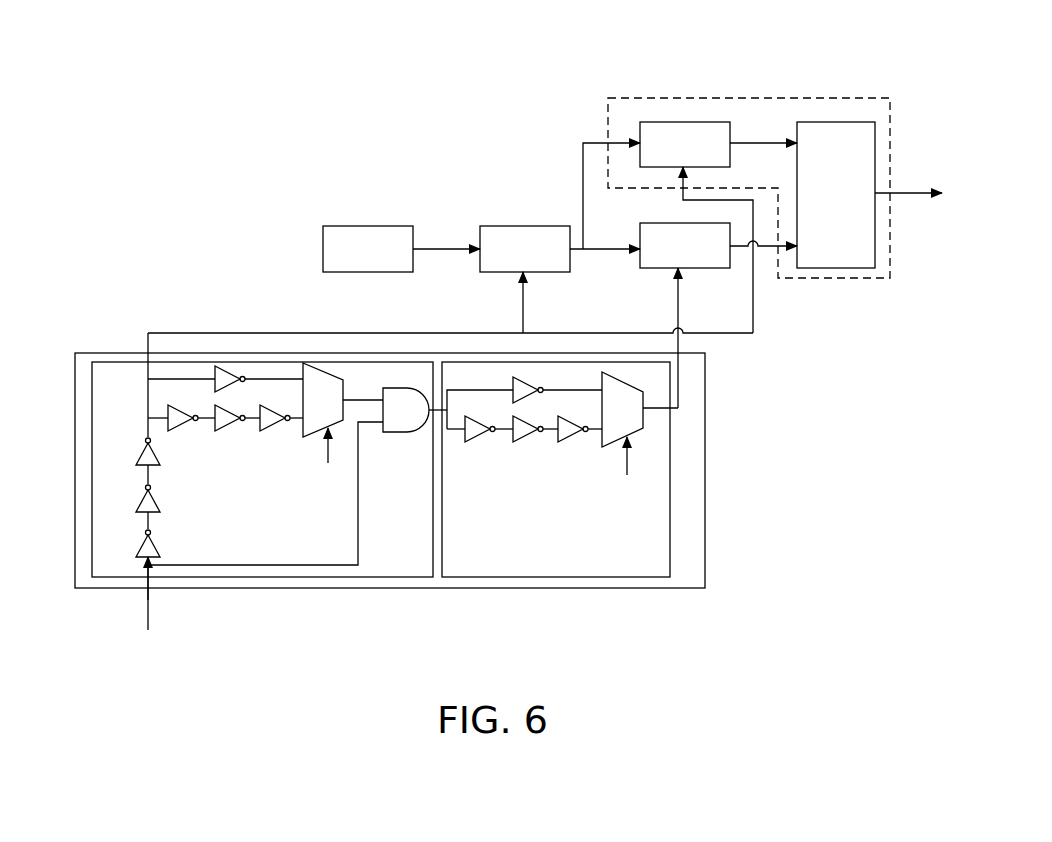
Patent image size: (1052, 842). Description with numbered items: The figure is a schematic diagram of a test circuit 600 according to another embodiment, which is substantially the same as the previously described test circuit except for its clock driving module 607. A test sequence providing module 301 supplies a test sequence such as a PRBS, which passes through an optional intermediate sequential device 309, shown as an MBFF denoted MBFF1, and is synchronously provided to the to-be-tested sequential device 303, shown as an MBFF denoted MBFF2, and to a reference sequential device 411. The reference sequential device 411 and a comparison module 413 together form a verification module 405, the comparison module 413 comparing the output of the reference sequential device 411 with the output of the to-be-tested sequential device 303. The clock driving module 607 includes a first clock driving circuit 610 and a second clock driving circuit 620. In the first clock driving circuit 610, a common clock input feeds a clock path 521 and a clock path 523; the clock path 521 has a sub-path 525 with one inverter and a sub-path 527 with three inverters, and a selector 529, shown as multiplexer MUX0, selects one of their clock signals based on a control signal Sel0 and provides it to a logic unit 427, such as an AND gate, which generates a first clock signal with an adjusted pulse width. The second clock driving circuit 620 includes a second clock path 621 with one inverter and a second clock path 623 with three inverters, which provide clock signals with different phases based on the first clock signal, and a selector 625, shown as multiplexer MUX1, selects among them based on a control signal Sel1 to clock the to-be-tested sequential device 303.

The test circuit 600 is at (399, 180).
The test sequence providing module 301 is at (378, 272).
The intermediate sequential device 309 is at (527, 226).
The to-be-tested sequential device 303 is at (653, 268).
The reference sequential device 411 is at (683, 122).
The verification module 405 is at (840, 98).
The comparison module 413 is at (875, 175).
The clock driving module 607 is at (685, 588).
The first clock driving circuit 610 is at (413, 577).
The second clock driving circuit 620 is at (562, 577).
The clock path 521 is at (125, 447).
The clock path 523 is at (325, 572).
The sub-path 525 is at (197, 370).
The sub-path 527 is at (225, 442).
The selector 529 is at (343, 425).
The logic unit 427 is at (415, 430).
The second clock path 621 is at (535, 368).
The second clock path 623 is at (520, 447).
The selector 625 is at (643, 430).